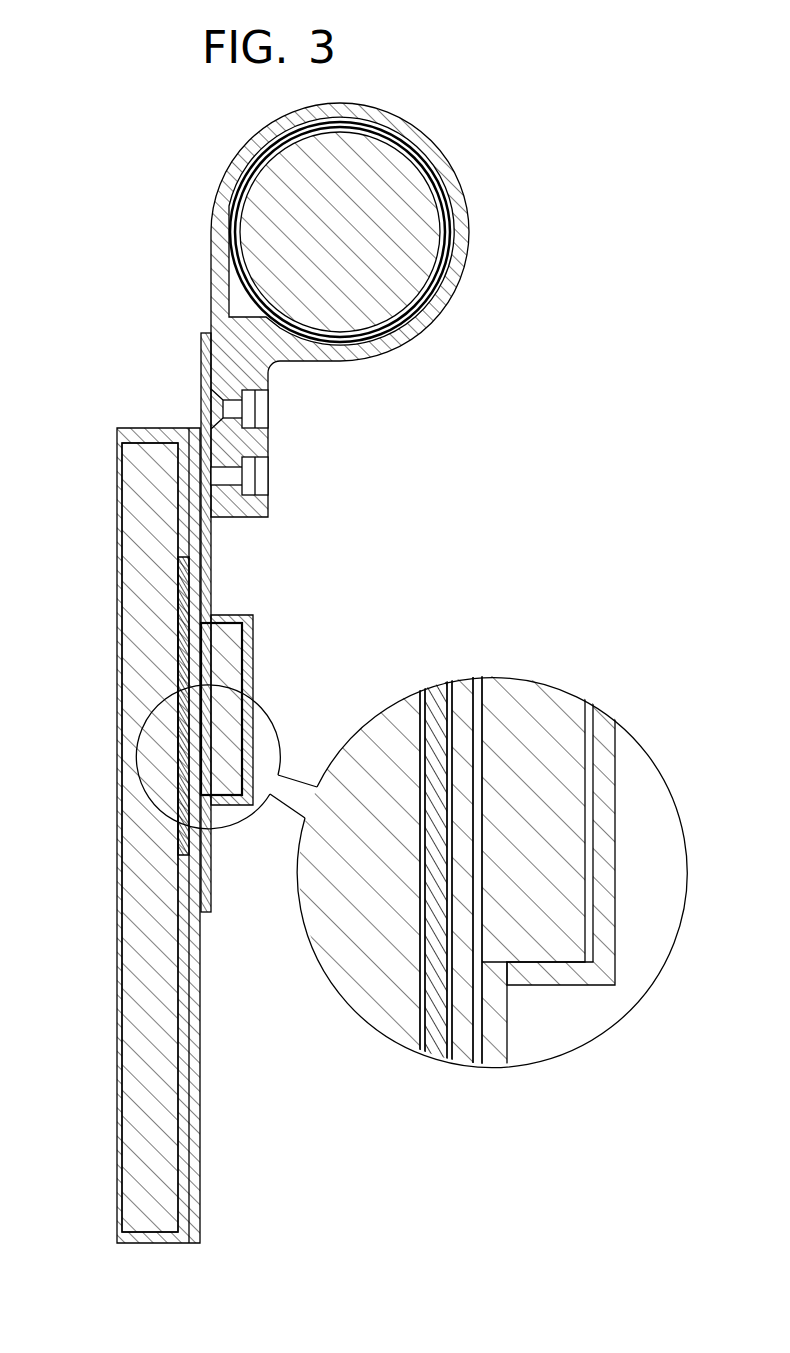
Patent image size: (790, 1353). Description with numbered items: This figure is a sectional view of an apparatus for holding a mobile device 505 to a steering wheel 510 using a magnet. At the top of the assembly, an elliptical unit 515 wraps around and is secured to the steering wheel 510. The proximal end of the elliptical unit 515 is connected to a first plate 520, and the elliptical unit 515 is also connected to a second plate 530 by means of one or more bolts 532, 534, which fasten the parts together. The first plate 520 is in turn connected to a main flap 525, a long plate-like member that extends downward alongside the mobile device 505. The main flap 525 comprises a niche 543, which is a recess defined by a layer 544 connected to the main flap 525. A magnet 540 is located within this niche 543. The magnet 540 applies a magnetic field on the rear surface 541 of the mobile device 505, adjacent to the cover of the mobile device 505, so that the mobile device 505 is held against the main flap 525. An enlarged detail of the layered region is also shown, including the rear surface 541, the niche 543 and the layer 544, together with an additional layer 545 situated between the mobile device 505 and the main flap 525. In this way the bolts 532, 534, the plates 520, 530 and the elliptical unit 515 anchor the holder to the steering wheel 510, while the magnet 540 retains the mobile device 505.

The mobile device 505 is at (130, 693).
The steering wheel 510 is at (372, 288).
The elliptical unit 515 is at (462, 248).
The first plate 520 is at (212, 265).
The main flap 525 is at (207, 376).
The second plate 530 is at (289, 417).
The bolt 532 is at (268, 480).
The bolt 534 is at (268, 407).
The magnet 540 is at (223, 663).
The rear surface 541 is at (183, 605).
The niche 543 is at (525, 703).
The layer 544 is at (600, 988).
The layer 545 is at (462, 1045).